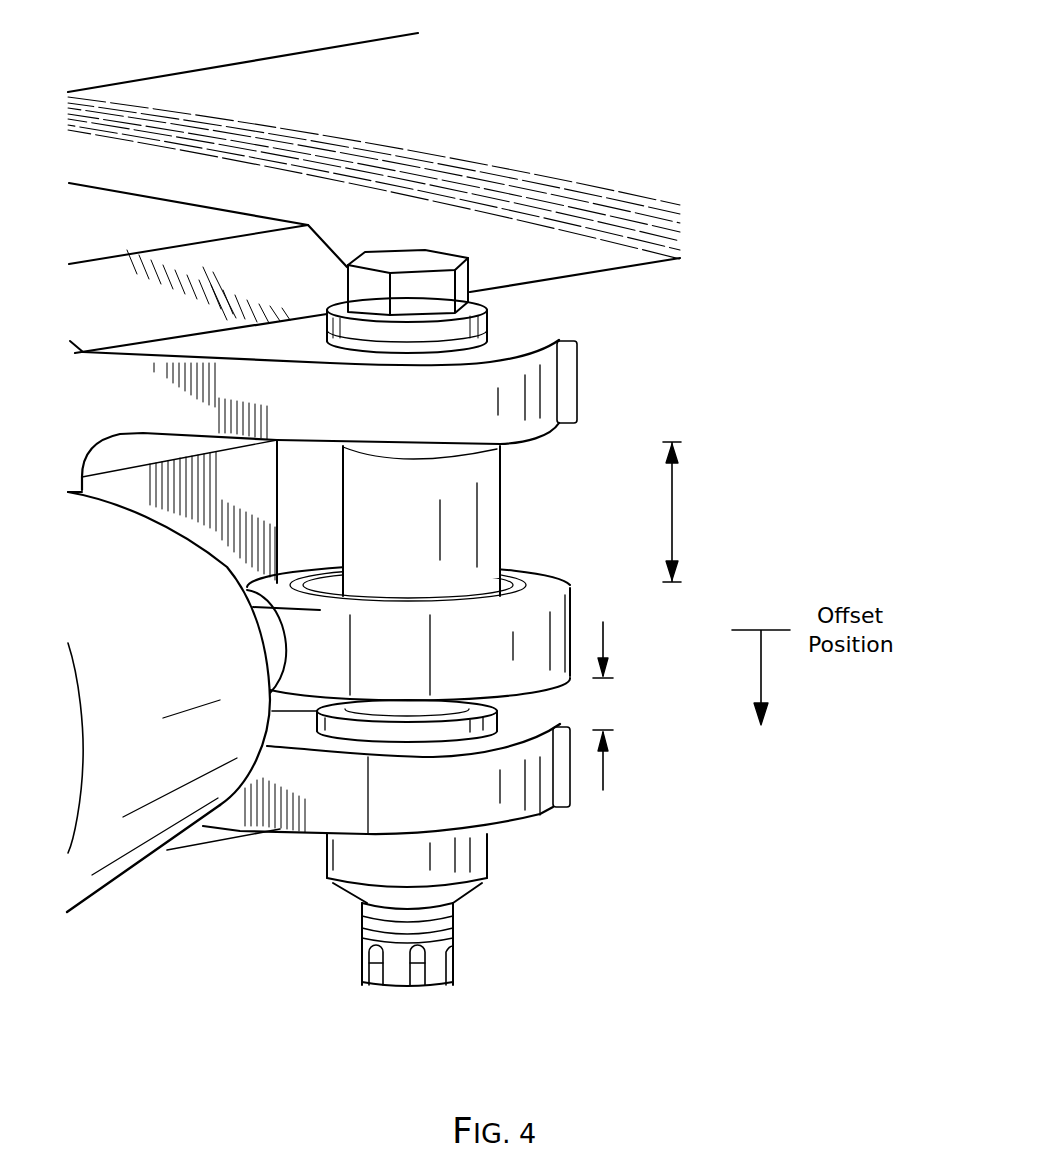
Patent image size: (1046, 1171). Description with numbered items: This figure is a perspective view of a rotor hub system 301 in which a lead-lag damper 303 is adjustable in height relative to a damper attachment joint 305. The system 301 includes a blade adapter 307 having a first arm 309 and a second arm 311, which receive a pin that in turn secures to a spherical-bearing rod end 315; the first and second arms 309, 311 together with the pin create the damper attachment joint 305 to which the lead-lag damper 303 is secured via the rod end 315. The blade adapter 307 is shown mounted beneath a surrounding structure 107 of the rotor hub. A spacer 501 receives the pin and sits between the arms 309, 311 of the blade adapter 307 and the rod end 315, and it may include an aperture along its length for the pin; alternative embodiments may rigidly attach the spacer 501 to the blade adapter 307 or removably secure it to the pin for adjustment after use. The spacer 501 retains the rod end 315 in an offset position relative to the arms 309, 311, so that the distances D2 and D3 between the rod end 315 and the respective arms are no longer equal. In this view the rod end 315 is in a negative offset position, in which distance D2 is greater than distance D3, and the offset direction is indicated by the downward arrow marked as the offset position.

The mounting plate 107 is at (273, 58).
The rotor hub system 301 is at (715, 53).
The lead-lag damper 303 is at (113, 885).
The damper attachment joint 305 is at (613, 975).
The blade adapter 307 is at (157, 197).
The first arm 309 is at (573, 393).
The second arm 311 is at (520, 822).
The rod end 315 is at (553, 570).
The spacer 501 is at (500, 503).
The distance D2 is at (672, 512).
The distance D3 is at (603, 762).